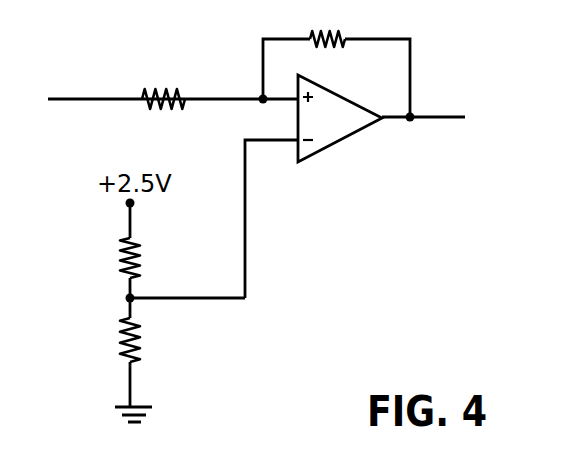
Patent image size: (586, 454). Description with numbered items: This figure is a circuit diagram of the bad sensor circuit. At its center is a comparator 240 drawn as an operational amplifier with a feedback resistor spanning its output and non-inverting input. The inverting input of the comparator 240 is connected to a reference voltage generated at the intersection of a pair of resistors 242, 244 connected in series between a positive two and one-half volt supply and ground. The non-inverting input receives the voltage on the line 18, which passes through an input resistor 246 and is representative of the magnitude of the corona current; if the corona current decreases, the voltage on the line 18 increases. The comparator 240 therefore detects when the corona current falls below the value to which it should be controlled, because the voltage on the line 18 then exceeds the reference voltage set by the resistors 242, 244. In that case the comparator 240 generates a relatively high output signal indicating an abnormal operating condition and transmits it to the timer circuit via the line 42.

The line 18 is at (60, 99).
The input resistor 246 is at (173, 90).
The comparator 240 is at (355, 132).
The line 42 is at (448, 117).
The resistor 242 is at (134, 250).
The resistor 244 is at (137, 350).